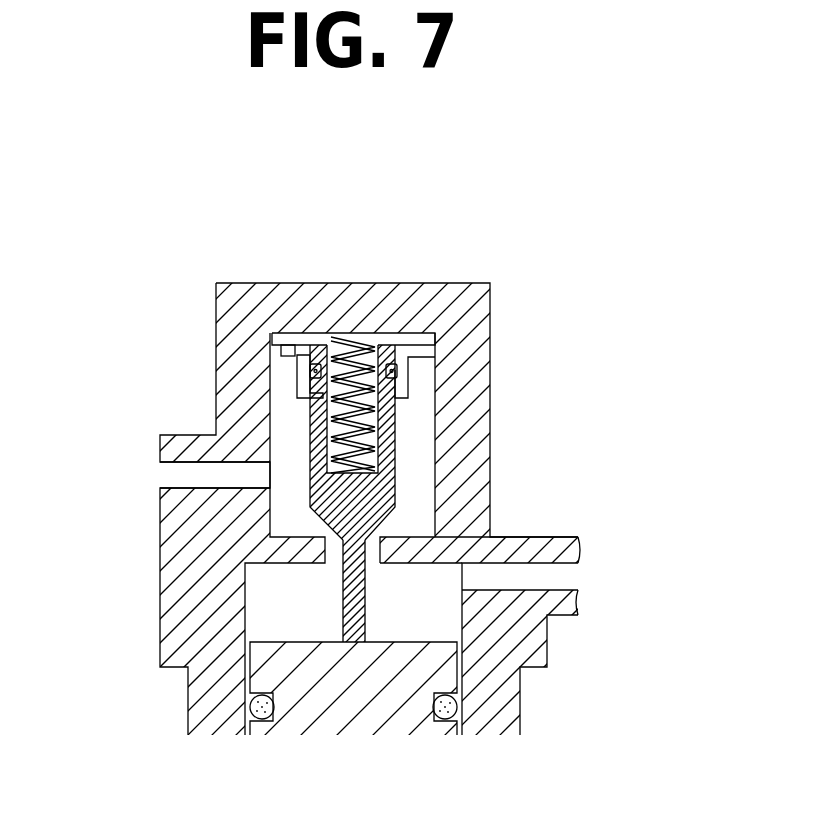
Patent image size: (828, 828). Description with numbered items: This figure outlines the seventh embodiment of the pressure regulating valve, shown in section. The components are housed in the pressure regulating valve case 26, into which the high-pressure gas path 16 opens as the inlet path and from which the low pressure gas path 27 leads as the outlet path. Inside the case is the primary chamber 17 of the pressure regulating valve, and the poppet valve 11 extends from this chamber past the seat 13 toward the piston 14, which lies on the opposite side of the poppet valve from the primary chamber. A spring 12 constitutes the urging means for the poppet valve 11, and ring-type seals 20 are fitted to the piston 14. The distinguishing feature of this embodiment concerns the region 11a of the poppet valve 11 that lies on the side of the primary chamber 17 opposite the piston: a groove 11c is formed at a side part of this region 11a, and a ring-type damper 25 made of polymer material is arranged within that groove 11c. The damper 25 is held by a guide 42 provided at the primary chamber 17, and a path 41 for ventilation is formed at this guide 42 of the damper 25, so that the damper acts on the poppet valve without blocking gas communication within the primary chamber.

The pressure regulating valve case 26 is at (478, 308).
The seat 13 is at (407, 547).
The low pressure gas path 27 is at (562, 580).
The high-pressure gas path 16 is at (170, 478).
The primary chamber 17 is at (413, 443).
The groove 11c is at (394, 364).
The guide 42 is at (296, 343).
The path for ventilation 41 is at (272, 368).
The damper 25 is at (315, 364).
The region of the poppet valve 11a is at (322, 335).
The spring 12 is at (325, 450).
The poppet valve 11 is at (350, 602).
The piston 14 is at (425, 673).
The ring-type seal 20 is at (275, 706).